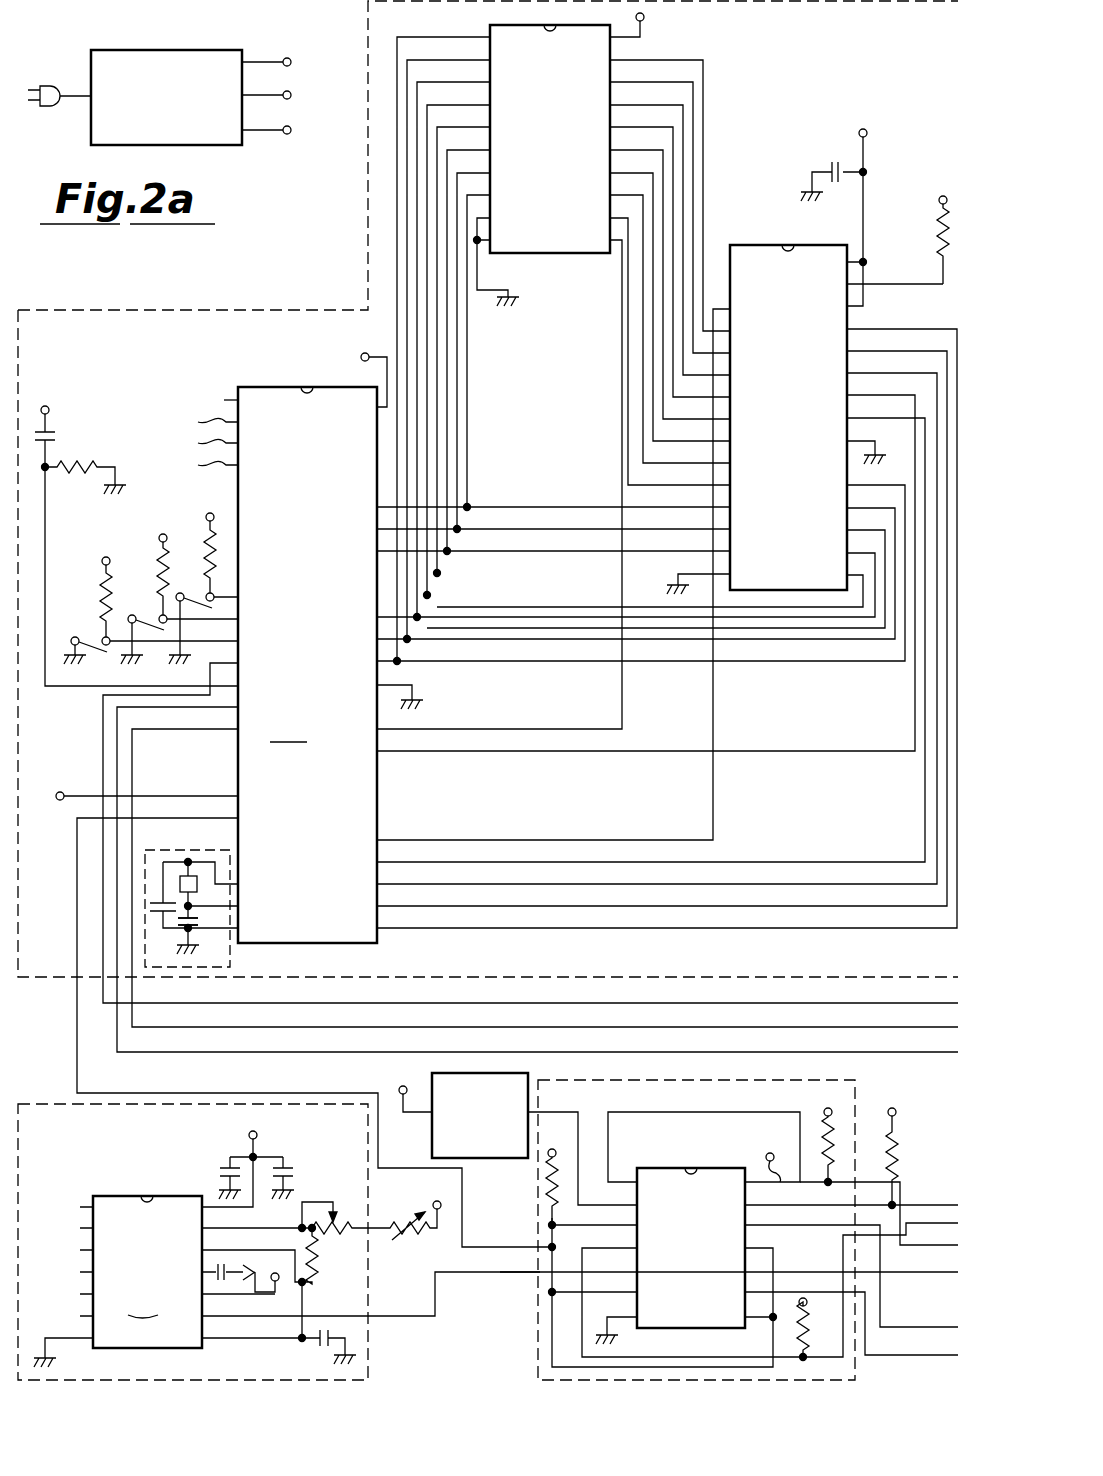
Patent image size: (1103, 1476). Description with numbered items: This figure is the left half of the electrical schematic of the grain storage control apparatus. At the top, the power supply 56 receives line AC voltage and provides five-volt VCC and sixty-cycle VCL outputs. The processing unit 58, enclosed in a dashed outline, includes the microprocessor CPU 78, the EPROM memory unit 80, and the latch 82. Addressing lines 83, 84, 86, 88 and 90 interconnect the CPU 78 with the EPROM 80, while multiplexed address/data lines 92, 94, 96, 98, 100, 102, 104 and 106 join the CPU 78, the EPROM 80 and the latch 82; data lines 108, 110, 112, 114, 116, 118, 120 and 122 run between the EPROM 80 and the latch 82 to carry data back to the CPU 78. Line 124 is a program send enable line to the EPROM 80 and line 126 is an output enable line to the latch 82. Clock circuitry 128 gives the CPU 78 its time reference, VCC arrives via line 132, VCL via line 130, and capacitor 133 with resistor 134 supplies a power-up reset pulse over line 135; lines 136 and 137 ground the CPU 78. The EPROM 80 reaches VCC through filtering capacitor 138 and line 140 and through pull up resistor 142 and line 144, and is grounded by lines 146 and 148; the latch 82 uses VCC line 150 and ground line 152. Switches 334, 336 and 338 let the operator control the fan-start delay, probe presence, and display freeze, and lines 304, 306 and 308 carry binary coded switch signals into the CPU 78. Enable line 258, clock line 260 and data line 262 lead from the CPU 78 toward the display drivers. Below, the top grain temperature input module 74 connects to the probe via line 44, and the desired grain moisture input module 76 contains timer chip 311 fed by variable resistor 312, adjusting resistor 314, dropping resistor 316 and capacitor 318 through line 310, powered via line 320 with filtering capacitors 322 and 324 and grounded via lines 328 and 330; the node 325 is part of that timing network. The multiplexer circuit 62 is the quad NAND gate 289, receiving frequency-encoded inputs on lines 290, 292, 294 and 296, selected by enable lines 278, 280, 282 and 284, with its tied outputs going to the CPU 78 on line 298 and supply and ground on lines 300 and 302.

The power supply 56 is at (186, 50).
The processing unit 58 is at (174, 310).
The microprocessor (CPU) 78 is at (272, 387).
The memory unit (EPROM) 80 is at (762, 245).
The latch 82 is at (490, 25).
The addressing line 83 is at (610, 840).
The addressing line 84 is at (774, 862).
The addressing line 86 is at (808, 884).
The addressing line 88 is at (838, 906).
The addressing line 90 is at (774, 928).
The multiplexed address/data line 92 is at (488, 507).
The multiplexed address/data line 94 is at (512, 529).
The multiplexed address/data line 96 is at (541, 551).
The multiplexed address/data line 98 is at (465, 607).
The multiplexed address/data line 100 is at (512, 617).
The multiplexed address/data line 102 is at (520, 628).
The multiplexed address/data line 104 is at (560, 639).
The multiplexed address/data line 106 is at (527, 661).
The data line 108 is at (703, 82).
The data line 110 is at (693, 107).
The data line 112 is at (683, 132).
The data line 114 is at (673, 156).
The data line 116 is at (663, 179).
The data line 118 is at (653, 193).
The data line 120 is at (643, 216).
The data line 122 is at (628, 270).
The program send enable line 124 is at (694, 750).
The output enable line 126 is at (550, 728).
The clock circuitry 128 is at (191, 850).
The VCL line 130 is at (88, 794).
The VCC supply line 132 is at (366, 338).
The capacitor 133 is at (54, 442).
The resistor 134 is at (77, 464).
The reset line 135 is at (46, 490).
The ground line 136 is at (418, 686).
The ground line 137 is at (205, 935).
The filtering capacitor 138 is at (834, 166).
The VCC line 140 is at (870, 272).
The pull up resistor 142 is at (935, 232).
The VCC line 144 is at (932, 288).
The ground line 146 is at (866, 440).
The ground line 148 is at (678, 576).
The VCC line 150 is at (642, 36).
The ground line 152 is at (516, 291).
The enable line 258 is at (231, 1003).
The clock line 260 is at (192, 1054).
The data line 262 is at (240, 1062).
The line 44 is at (404, 1085).
The top grain temperature input module 74 is at (524, 1070).
The data input multiplexer circuit 62 is at (868, 1080).
The desired grain moisture level input module 76 is at (368, 1342).
The top probe temperature input enable line 278 is at (722, 1112).
The desired grain moisture input enable line 280 is at (842, 1264).
The air temperature input enable line 282 is at (896, 1204).
The humidity input enable line 284 is at (890, 1272).
The quad two-input NAND gate 289 is at (676, 1168).
The input line 290 is at (560, 1112).
The input line 292 is at (894, 1295).
The input line 294 is at (924, 1364).
The input line 296 is at (516, 1276).
The multiplexed output line 298 is at (374, 1092).
The VCC line 300 is at (857, 1167).
The ground line 302 is at (618, 1328).
The switch signal line 304 is at (195, 421).
The switch signal line 306 is at (195, 443).
The switch signal line 308 is at (195, 465).
The line 310 is at (376, 1252).
The timer chip 311 is at (120, 1196).
The variable resistor 312 is at (406, 1237).
The adjusting resistor 314 is at (318, 1202).
The dropping resistor 316 is at (318, 1260).
The capacitor 318 is at (316, 1346).
The VCC line 320 is at (238, 1208).
The filtering capacitor 322 is at (220, 1166).
The filtering capacitor 324 is at (292, 1172).
The line 325 is at (302, 1282).
The ground line 328 is at (68, 1343).
The ground line 330 is at (208, 1272).
The manually actuated switch 334 is at (190, 574).
The manually actuated switch 336 is at (140, 596).
The manually actuated switch 338 is at (92, 618).